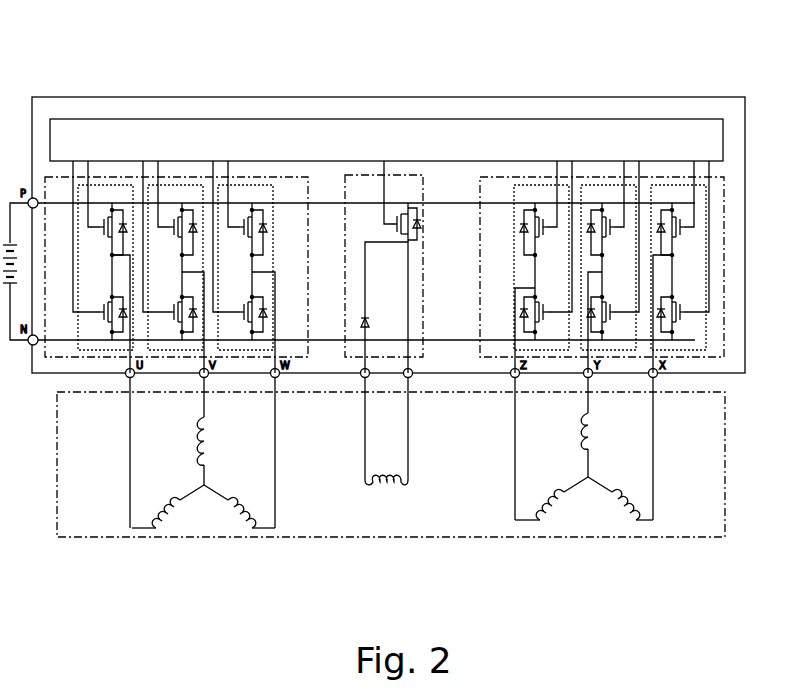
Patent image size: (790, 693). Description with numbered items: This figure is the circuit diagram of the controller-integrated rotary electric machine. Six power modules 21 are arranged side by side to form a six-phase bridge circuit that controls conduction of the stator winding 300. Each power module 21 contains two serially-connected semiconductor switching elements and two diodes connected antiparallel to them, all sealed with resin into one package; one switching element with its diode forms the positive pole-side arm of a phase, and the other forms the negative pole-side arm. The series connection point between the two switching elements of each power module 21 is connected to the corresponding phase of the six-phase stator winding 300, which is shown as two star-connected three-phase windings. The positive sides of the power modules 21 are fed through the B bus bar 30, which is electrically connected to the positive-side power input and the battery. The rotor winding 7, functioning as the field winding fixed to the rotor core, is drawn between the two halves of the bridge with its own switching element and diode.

The power module 21 is at (108, 190).
The B bus bar 30 is at (384, 148).
The stator winding 300 is at (198, 502).
The rotor winding 7 is at (385, 497).